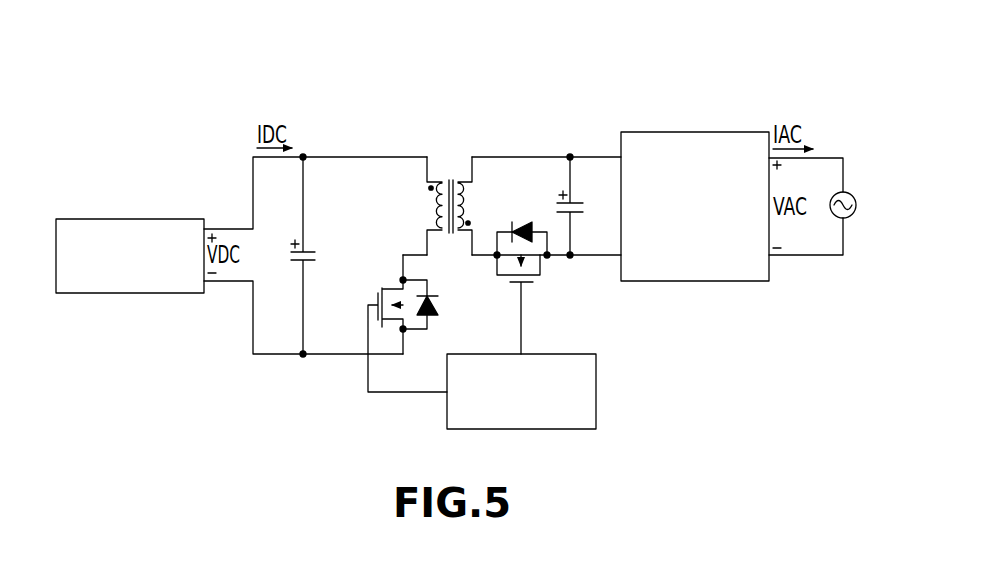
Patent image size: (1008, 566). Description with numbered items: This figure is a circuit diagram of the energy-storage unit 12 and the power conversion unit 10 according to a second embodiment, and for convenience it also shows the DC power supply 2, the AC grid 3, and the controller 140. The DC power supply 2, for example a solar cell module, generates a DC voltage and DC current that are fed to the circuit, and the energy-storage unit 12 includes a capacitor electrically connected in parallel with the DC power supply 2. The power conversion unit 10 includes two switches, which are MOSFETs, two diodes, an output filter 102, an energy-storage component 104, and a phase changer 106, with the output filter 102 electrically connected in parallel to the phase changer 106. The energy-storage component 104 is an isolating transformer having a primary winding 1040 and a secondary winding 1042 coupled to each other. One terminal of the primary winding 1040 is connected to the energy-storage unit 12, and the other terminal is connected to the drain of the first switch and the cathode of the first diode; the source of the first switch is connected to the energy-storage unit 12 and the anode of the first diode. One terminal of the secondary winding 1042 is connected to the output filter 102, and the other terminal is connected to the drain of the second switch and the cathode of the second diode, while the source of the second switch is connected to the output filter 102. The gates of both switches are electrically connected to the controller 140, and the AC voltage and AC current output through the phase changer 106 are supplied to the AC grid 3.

The DC power supply 2 is at (131, 224).
The AC grid 3 is at (848, 190).
The power conversion unit 10 is at (399, 76).
The energy-storage unit 12 is at (320, 206).
The output filter 102 is at (555, 205).
The energy-storage component 104 is at (492, 101).
The primary winding 1040 is at (440, 178).
The secondary winding 1042 is at (460, 178).
The phase changer 106 is at (695, 138).
The controller 140 is at (592, 390).